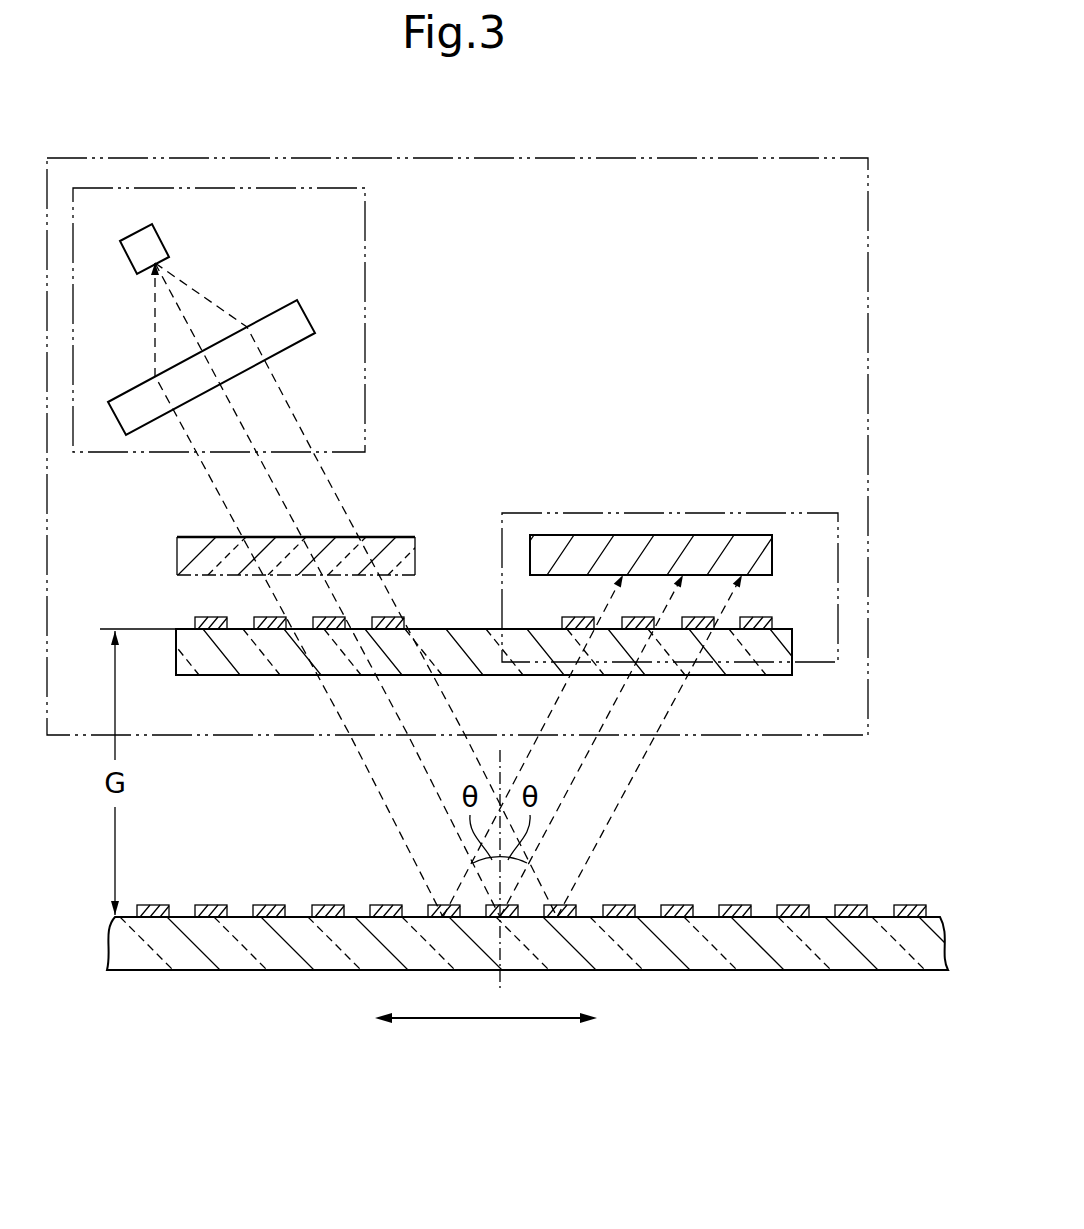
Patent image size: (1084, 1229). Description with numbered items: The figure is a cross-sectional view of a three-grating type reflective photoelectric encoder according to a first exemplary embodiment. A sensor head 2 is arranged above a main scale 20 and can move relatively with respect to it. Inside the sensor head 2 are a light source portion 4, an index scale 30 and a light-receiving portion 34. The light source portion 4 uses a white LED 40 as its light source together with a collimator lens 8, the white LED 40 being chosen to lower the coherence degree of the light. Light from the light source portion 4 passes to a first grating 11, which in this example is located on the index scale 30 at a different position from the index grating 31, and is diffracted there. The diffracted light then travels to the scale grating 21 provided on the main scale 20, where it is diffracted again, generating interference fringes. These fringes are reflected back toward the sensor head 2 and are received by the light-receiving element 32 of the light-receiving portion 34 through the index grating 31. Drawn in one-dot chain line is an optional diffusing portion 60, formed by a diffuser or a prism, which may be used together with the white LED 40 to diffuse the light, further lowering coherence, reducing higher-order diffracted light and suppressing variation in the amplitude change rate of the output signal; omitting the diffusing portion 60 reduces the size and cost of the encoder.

The sensor head 2 is at (503, 157).
The light source portion 4 is at (366, 305).
The collimator lens 8 is at (297, 304).
The white LED 40 is at (168, 246).
The diffusing portion 60 is at (415, 537).
The light-receiving portion 34 is at (748, 513).
The light-receiving element 32 is at (772, 560).
The index grating 31 is at (758, 620).
The index scale 30 is at (253, 662).
The first grating 11 is at (210, 617).
The main scale 20 is at (795, 960).
The scale grating 21 is at (790, 905).